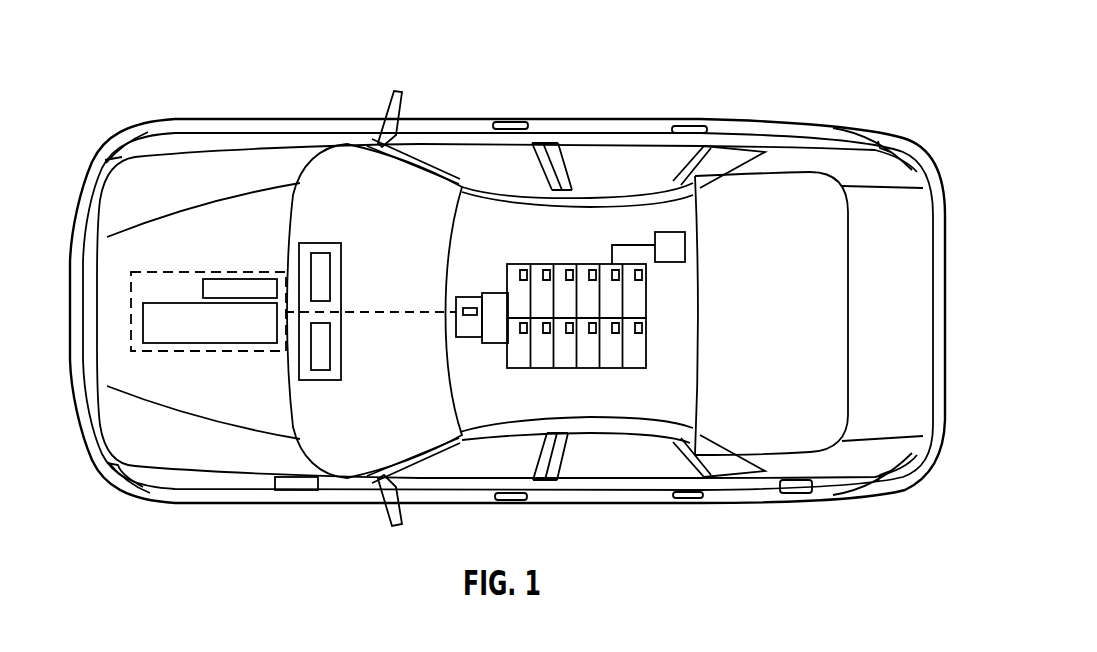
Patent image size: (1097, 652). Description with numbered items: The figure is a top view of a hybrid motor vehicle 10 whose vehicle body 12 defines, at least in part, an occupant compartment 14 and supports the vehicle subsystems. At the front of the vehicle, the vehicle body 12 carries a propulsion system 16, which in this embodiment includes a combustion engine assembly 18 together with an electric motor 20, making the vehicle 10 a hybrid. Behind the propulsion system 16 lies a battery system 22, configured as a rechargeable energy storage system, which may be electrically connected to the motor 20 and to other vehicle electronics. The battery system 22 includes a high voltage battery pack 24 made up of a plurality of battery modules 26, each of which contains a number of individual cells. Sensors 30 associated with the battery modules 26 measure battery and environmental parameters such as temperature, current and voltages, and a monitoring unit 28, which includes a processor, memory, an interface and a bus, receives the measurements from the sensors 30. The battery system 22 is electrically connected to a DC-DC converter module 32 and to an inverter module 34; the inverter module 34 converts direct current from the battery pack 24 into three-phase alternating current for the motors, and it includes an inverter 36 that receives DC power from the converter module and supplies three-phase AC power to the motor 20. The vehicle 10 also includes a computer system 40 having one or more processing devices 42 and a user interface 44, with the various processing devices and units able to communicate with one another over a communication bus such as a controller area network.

The motor vehicle 10 is at (118, 48).
The vehicle body 12 is at (551, 113).
The occupant compartment 14 is at (592, 425).
The propulsion system 16 is at (170, 270).
The combustion engine assembly 18 is at (232, 343).
The electric motor 20 is at (254, 278).
The battery system 22 is at (631, 314).
The high voltage battery pack 24 is at (647, 304).
The battery modules 26 is at (541, 272).
The monitoring unit 28 is at (687, 248).
The sensors 30 is at (592, 272).
The DC-DC converter module 32 is at (494, 292).
The inverter module 34 is at (458, 298).
The inverter 36 is at (462, 310).
The computer system 40 is at (321, 234).
The processing devices 42 is at (331, 278).
The user interface 44 is at (331, 346).